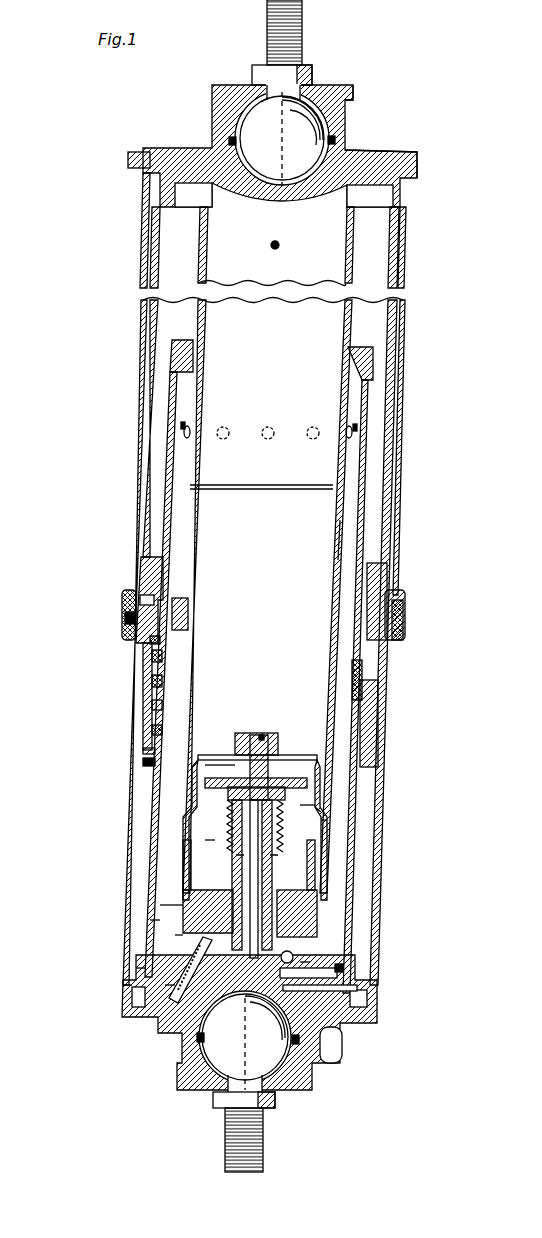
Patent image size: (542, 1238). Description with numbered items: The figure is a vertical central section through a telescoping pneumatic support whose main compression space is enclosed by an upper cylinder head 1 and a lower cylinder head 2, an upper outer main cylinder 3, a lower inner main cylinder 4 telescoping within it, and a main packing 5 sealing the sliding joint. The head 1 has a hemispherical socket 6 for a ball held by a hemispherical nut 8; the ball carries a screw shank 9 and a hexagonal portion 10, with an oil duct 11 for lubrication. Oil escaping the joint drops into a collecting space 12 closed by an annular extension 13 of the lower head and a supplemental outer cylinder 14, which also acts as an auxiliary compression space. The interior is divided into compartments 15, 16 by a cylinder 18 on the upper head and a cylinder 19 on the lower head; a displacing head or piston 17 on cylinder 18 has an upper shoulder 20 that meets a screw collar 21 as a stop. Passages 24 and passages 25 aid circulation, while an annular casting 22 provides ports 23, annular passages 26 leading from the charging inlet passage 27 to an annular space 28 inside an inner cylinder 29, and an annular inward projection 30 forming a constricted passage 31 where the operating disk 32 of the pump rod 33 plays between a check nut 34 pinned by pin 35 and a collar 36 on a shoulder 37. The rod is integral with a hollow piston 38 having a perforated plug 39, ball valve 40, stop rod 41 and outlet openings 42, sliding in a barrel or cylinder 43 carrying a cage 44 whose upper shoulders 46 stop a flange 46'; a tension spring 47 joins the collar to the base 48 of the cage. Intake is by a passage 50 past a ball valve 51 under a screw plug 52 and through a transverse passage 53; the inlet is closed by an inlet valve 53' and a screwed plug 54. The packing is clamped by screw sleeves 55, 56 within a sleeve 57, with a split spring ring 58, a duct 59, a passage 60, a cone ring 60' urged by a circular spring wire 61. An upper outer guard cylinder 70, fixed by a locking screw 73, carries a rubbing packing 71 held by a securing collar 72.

The upper cylinder head 1 is at (212, 145).
The lower cylinder head 2 is at (330, 1047).
The upper outer main cylinder 3 is at (150, 334).
The lower inner main cylinder 4 is at (190, 780).
The main packing 5 is at (150, 692).
The hemispherical socket 6 is at (350, 157).
The hemispherical nut 8 is at (354, 95).
The screw shank 9 is at (302, 46).
The hexagonal portion 10 is at (312, 76).
The oil duct 11 is at (262, 100).
The collecting space 12 is at (160, 905).
The annular extension 13 is at (130, 990).
The supplemental outer cylinder 14 is at (232, 880).
The compartment 15 is at (260, 649).
The compartment 16 is at (185, 825).
The displacing head or piston 17 is at (362, 690).
The cylinder 18 is at (352, 333).
The cylinder 19 is at (345, 535).
The upper shoulder 20 is at (403, 615).
The screw collar 21 is at (175, 362).
The annular casting 22 is at (310, 850).
The ports 23 is at (312, 840).
The passages 24 is at (268, 428).
The passages 25 is at (212, 247).
The annular passages 26 is at (285, 870).
The charging inlet passage 27 is at (175, 935).
The annular space 28 is at (378, 748).
The inner cylinder 29 is at (200, 612).
The annular inward projection 30 is at (312, 755).
The constricted passage 31 is at (222, 760).
The operating disk 32 is at (285, 778).
The pump rod 33 is at (262, 733).
The check nut 34 is at (248, 733).
The pin 35 is at (264, 735).
The collar 36 is at (330, 792).
The shoulder 37 is at (228, 795).
The hollow piston 38 is at (317, 903).
The perforated plug 39 is at (136, 968).
The ball valve 40 is at (293, 957).
The stop rod 41 is at (337, 970).
The outlet openings 42 is at (325, 808).
The barrel or cylinder 43 is at (234, 852).
The cage 44 is at (205, 840).
The upper shoulders 46 is at (110, 798).
The flange 46' is at (401, 823).
The tension spring 47 is at (250, 890).
The base 48 is at (150, 920).
The passage 50 is at (357, 989).
The ball valve 51 is at (343, 970).
The screw plug 52 is at (310, 962).
The transverse passage 53 is at (248, 1042).
The inlet valve 53' is at (103, 975).
The screwed plug 54 is at (178, 1015).
The screw sleeve 55 is at (150, 735).
The screw sleeve 56 is at (152, 660).
The sleeve 57 is at (146, 568).
The split spring ring 58 is at (143, 752).
The duct 59 is at (143, 764).
The passage 60 is at (117, 663).
The cone ring 60' is at (109, 675).
The circular spring wire 61 is at (150, 640).
The upper outer guard cylinder 70 is at (138, 494).
The rubbing packing 71 is at (126, 618).
The securing collar 72 is at (124, 605).
The locking screw 73 is at (130, 160).